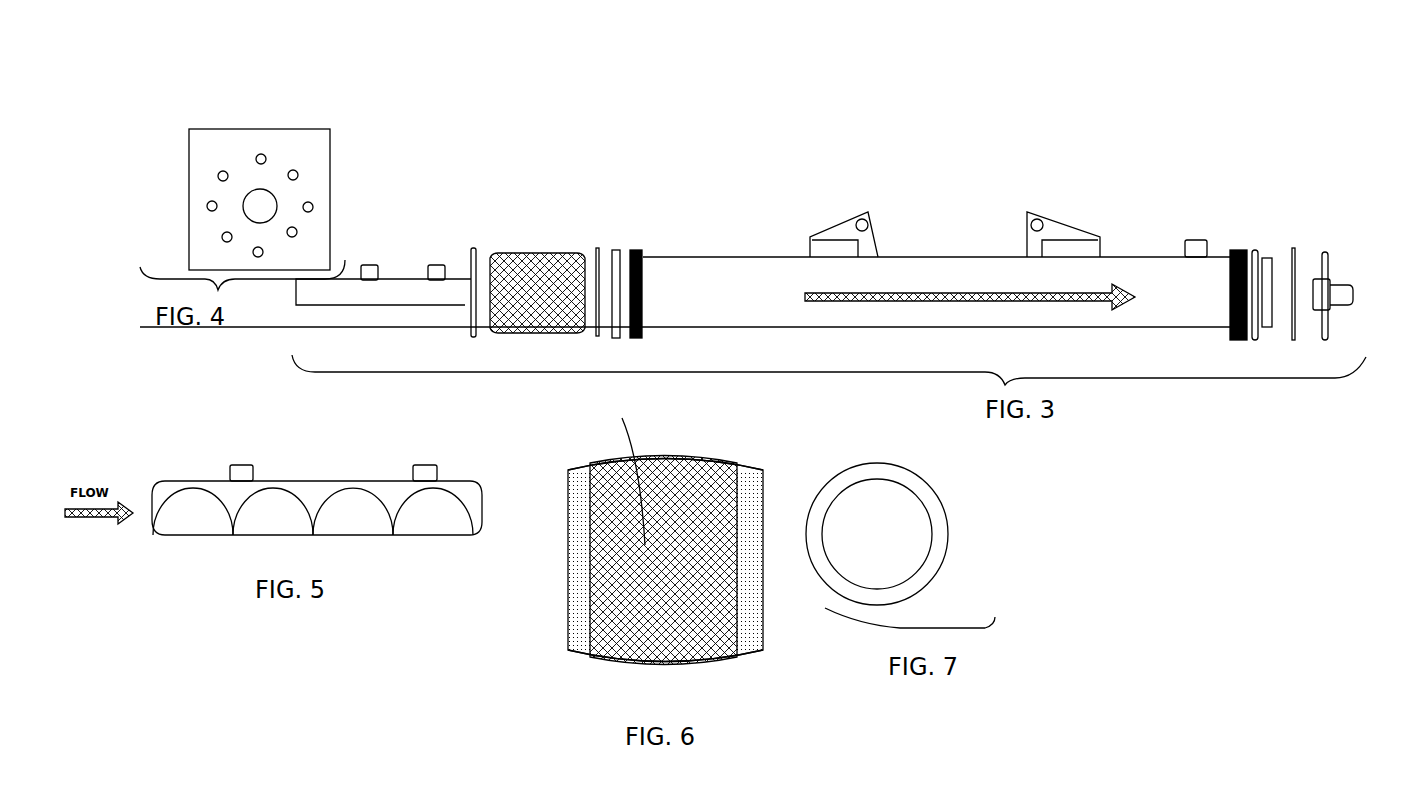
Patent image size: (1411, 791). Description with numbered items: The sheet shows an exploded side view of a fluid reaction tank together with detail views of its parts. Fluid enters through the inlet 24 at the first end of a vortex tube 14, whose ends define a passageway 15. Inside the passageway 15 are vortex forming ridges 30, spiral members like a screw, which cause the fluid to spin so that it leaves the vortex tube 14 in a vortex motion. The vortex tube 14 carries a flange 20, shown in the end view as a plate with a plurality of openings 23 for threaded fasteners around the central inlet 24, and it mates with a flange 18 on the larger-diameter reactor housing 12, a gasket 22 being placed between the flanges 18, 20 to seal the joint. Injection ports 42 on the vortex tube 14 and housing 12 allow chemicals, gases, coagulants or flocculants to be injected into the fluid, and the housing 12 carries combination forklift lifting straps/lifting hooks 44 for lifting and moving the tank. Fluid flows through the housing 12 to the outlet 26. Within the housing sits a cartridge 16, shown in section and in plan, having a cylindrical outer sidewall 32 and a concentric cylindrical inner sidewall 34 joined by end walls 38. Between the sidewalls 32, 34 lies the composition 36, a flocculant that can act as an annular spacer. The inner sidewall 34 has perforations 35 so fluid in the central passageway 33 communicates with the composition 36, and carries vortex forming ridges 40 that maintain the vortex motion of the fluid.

In FIG. 3, the reactor housing 12 is at (759, 266).
In FIG. 3, the vortex tube 14 is at (370, 324).
In FIG. 5, the vortex tube 14 is at (200, 567).
In FIG. 5, the passageway 15 is at (178, 515).
In FIG. 3, the cartridge 16 is at (540, 246).
In FIG. 6, the cartridge 16 is at (675, 424).
In FIG. 7, the cartridge 16 is at (917, 470).
In FIG. 3, the flange 18 is at (625, 240).
In FIG. 4, the flange 20 is at (245, 122).
In FIG. 3, the flange 20 is at (475, 240).
In FIG. 3, the gasket 22 is at (600, 242).
In FIG. 4, the openings 23 is at (330, 162).
In FIG. 4, the inlet 24 is at (268, 203).
In FIG. 5, the inlet 24 is at (140, 485).
In FIG. 3, the outlet 26 is at (1356, 292).
In FIG. 5, the vortex forming ridges 30 is at (320, 513).
In FIG. 6, the cylindrical outer sidewall 32 is at (766, 470).
In FIG. 7, the cylindrical outer sidewall 32 is at (944, 492).
In FIG. 6, the passageway 33 is at (624, 467).
In FIG. 6, the cylindrical inner sidewall 34 is at (592, 563).
In FIG. 7, the cylindrical inner sidewall 34 is at (930, 560).
In FIG. 6, the perforations 35 is at (602, 472).
In FIG. 6, the composition 36 is at (577, 602).
In FIG. 7, the composition 36 is at (942, 533).
In FIG. 6, the end wall 38 is at (715, 455).
In FIG. 6, the vortex forming ridges 40 is at (700, 652).
In FIG. 3, the injection ports 42 is at (437, 262).
In FIG. 5, the injection ports 42 is at (245, 462).
In FIG. 3, the combination forklift lifting straps/lifting hooks 44 is at (850, 205).